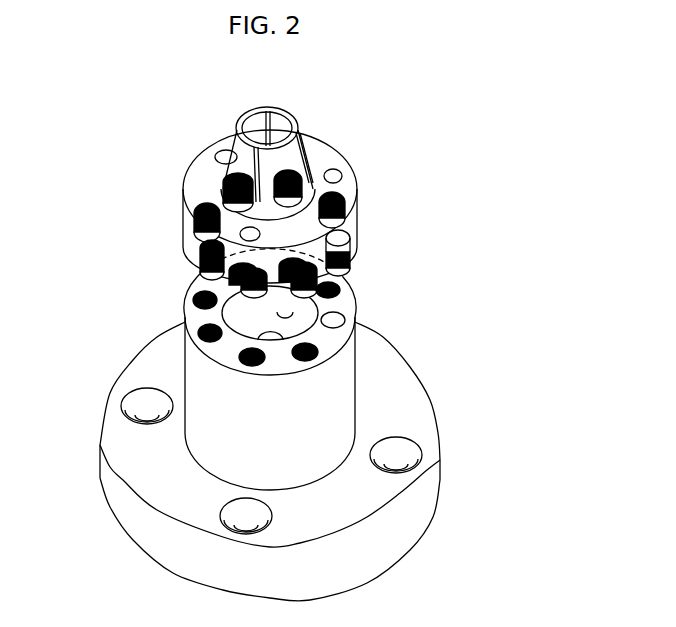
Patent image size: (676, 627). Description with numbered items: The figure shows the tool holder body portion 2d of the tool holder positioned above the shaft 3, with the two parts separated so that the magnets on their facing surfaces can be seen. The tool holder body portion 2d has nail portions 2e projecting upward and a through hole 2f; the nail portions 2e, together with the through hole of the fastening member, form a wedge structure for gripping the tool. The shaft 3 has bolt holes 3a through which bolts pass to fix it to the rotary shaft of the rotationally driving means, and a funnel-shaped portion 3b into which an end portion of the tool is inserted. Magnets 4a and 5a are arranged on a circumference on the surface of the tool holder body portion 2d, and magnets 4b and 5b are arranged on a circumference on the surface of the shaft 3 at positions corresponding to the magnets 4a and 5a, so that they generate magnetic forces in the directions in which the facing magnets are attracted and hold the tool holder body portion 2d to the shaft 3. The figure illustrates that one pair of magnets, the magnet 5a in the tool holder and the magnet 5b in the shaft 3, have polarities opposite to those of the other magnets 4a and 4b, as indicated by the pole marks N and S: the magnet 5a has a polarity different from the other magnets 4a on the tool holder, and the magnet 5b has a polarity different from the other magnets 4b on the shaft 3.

The tool holder body portion 2d is at (335, 152).
The nail portions 2e is at (248, 113).
The through hole 2f is at (280, 127).
The shaft 3 is at (405, 387).
The bolt holes 3a is at (382, 457).
The funnel-shaped portion 3b is at (263, 327).
The magnet 4a is at (205, 272).
The magnet 4b is at (207, 337).
The magnet 5a is at (352, 256).
The magnet 5b is at (342, 318).
The north pole N is at (347, 205).
The south pole S is at (352, 245).